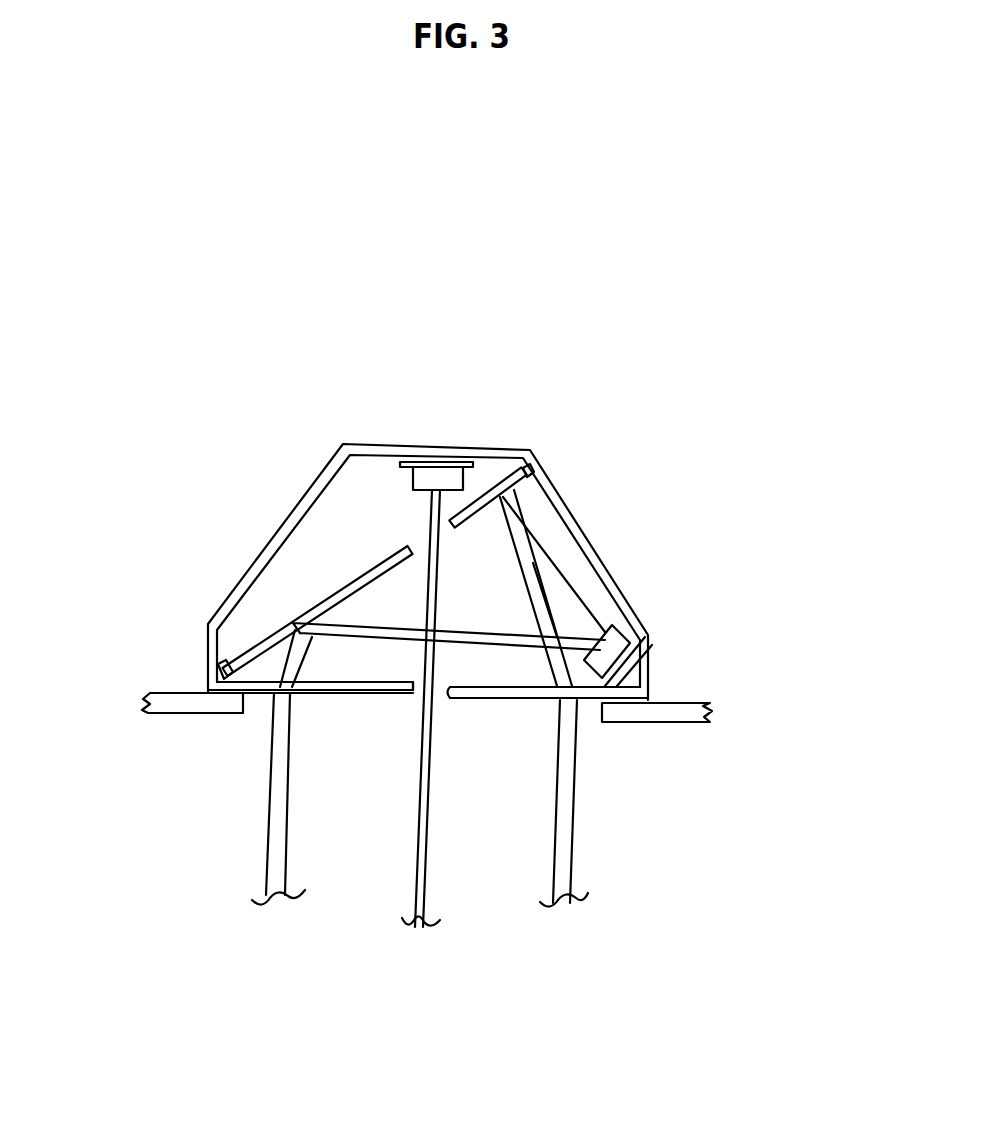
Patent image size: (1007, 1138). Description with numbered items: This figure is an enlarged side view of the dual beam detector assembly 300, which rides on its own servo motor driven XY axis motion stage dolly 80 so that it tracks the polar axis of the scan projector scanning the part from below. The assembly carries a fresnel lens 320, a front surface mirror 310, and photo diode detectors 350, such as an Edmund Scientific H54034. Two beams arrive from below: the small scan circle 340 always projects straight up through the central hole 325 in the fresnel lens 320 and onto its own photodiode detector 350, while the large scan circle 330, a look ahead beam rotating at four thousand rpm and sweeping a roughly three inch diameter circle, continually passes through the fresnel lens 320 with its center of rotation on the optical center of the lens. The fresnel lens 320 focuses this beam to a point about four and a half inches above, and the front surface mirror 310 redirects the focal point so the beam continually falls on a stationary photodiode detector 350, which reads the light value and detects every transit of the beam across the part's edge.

The dual beam detector assembly 300 is at (342, 540).
The front surface mirror 310 is at (336, 595).
The fresnel lens 320 is at (318, 695).
The central hole 325 is at (440, 697).
The large scan circle 330 is at (557, 810).
The small scan circle 340 is at (413, 912).
The photo diode detectors 350 is at (437, 480).
The XY axis motion stage dolly 80 is at (710, 707).